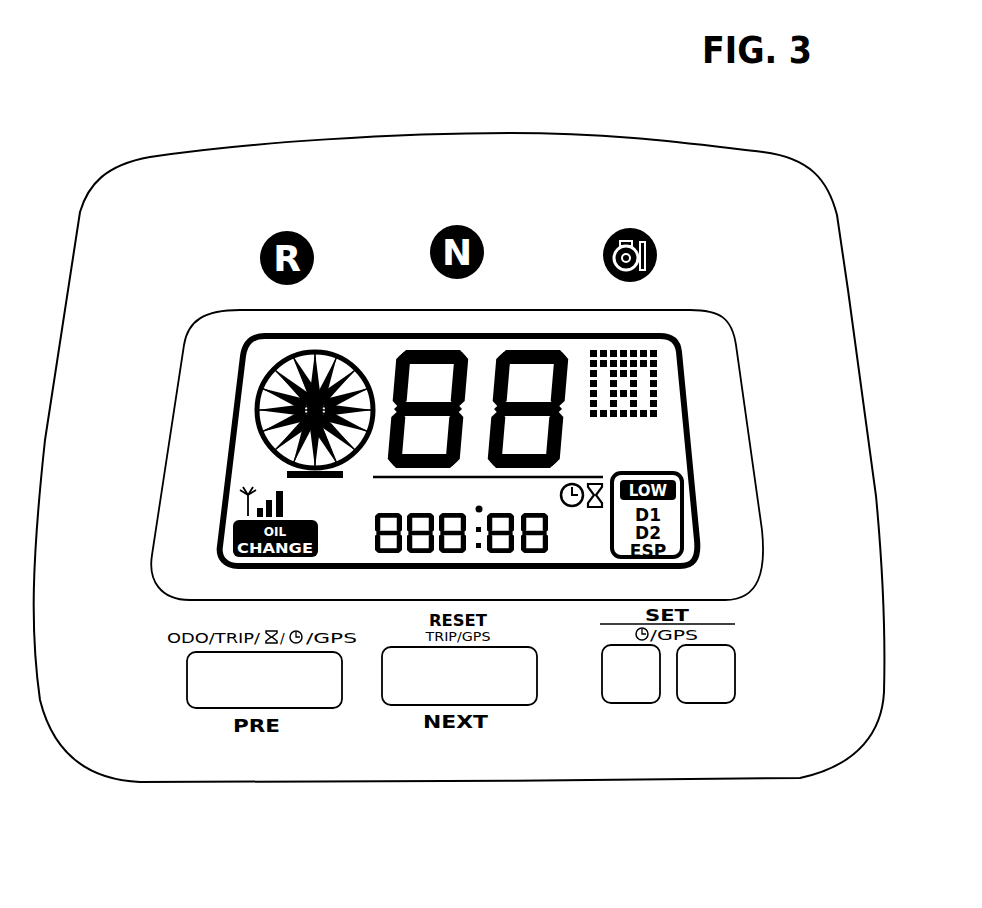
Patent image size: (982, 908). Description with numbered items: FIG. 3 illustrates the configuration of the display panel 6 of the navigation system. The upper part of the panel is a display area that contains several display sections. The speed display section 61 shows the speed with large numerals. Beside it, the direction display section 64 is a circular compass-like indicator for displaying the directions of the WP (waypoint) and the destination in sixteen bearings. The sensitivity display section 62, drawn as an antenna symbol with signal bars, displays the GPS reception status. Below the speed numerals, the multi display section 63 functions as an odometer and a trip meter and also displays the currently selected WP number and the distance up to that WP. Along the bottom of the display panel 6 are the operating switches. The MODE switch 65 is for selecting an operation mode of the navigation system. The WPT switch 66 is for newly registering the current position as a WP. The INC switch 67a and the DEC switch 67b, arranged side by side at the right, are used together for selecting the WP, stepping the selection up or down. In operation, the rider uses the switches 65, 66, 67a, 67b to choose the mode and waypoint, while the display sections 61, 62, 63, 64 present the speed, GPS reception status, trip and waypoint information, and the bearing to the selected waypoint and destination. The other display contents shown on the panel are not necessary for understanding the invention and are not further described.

The display panel 6 is at (516, 134).
The speed display section 61 is at (488, 345).
The sensitivity display section 62 is at (238, 505).
The multi display section 63 is at (467, 569).
The direction display section 64 is at (325, 357).
The MODE switch 65 is at (288, 700).
The WPT switch 66 is at (498, 697).
The INC switch 67a is at (610, 698).
The DEC switch 67b is at (693, 695).